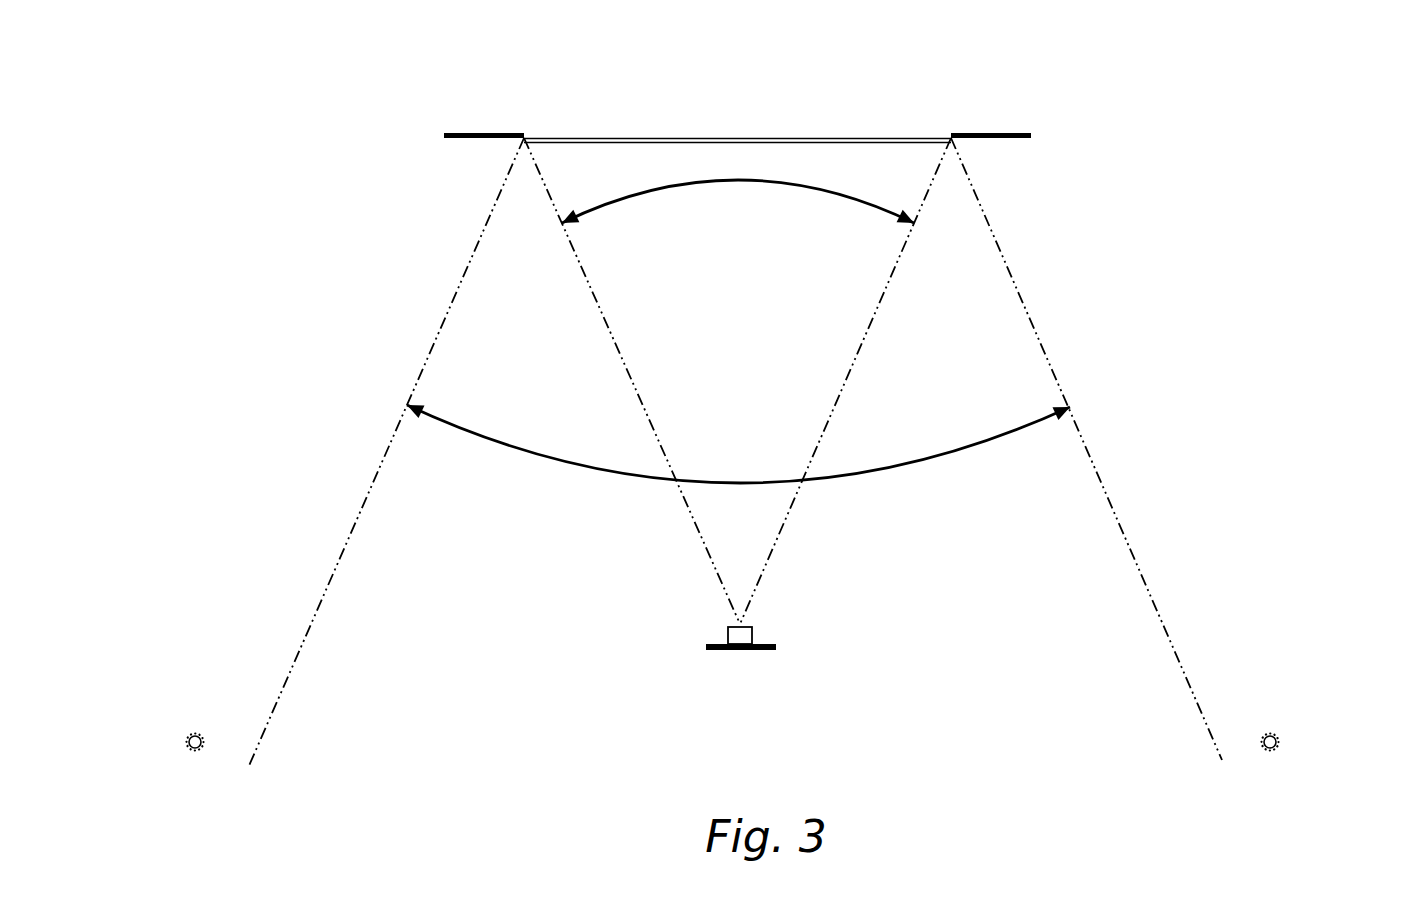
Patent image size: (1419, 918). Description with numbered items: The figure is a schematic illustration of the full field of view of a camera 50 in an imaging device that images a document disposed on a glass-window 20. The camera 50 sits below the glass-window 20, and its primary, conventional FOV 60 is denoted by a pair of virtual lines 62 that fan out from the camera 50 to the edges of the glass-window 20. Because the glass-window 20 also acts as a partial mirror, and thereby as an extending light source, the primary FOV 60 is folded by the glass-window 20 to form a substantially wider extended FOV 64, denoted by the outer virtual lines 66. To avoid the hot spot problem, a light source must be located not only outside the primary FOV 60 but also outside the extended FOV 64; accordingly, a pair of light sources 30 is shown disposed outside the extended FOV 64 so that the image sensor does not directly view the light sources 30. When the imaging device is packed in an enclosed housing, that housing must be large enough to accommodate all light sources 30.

The glass-window 20 is at (842, 137).
The light sources 30 is at (183, 742).
The camera 50 is at (742, 650).
The primary FOV 60 is at (676, 183).
The virtual lines 62 is at (580, 272).
The extended FOV 64 is at (920, 470).
The virtual lines 66 is at (380, 472).